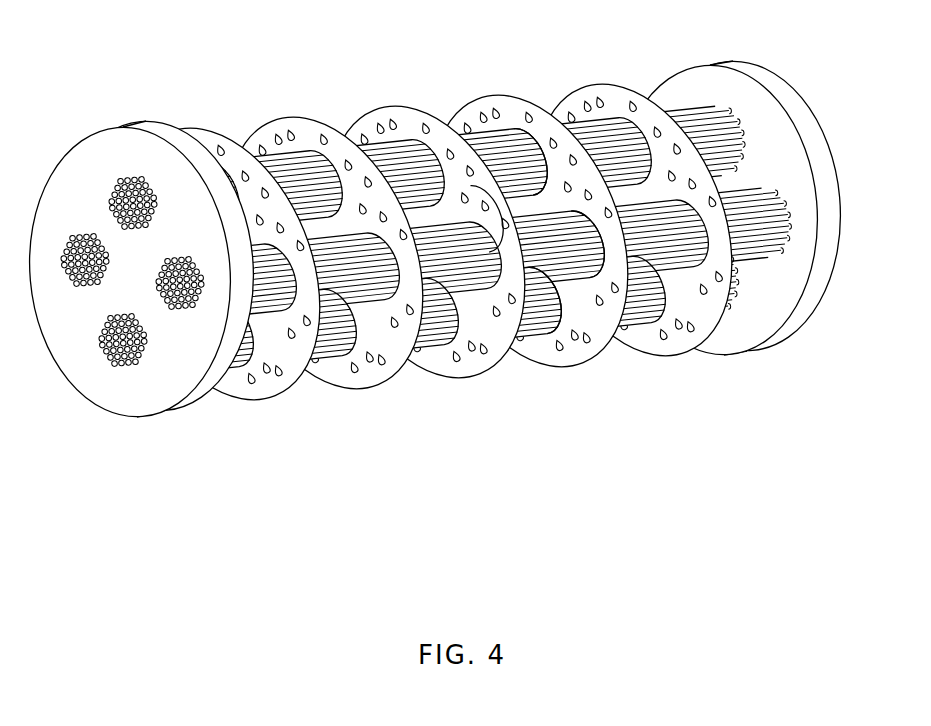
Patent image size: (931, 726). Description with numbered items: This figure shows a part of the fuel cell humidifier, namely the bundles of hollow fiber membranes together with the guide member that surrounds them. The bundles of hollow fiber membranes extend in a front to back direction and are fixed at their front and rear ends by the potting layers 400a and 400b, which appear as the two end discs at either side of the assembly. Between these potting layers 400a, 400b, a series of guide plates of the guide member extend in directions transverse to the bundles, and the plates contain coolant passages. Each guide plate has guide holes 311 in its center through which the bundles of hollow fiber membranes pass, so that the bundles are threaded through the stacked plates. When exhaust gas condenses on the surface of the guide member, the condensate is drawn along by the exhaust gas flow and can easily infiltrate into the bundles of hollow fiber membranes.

The guide holes 311 is at (501, 278).
The potting layer 400a is at (158, 392).
The potting layer 400b is at (745, 332).